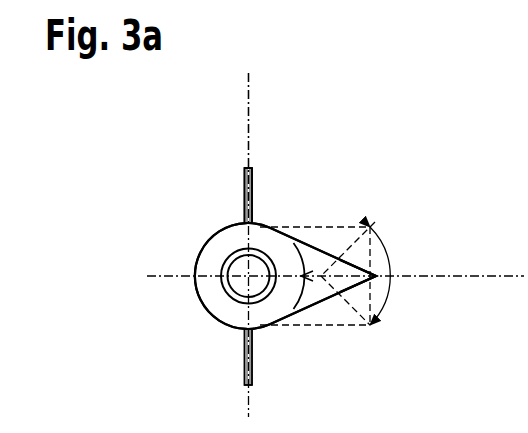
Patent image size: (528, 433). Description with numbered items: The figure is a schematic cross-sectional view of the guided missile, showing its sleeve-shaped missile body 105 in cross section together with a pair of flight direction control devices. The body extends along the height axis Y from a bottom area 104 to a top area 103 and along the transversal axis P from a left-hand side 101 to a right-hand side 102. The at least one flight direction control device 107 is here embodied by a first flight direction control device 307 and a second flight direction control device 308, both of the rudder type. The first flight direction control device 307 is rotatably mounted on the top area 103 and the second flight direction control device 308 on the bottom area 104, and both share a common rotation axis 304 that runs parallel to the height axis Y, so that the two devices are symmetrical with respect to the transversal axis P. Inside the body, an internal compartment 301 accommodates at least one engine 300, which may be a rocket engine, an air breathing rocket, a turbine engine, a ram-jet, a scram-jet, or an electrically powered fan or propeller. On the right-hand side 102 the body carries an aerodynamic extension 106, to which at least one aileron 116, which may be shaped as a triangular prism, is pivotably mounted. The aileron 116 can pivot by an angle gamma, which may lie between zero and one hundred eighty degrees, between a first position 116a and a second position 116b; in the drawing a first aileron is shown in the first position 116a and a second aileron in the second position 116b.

The left-hand side 101 is at (192, 290).
The right-hand side 102 is at (368, 283).
The top area 103 is at (236, 218).
The bottom area 104 is at (237, 333).
The sleeve-shaped missile body 105 is at (208, 229).
The aerodynamic extension 106 is at (286, 252).
The flight direction control device 107 is at (242, 166).
The aileron 116 is at (323, 250).
The first position 116a is at (329, 300).
The second position 116b is at (375, 212).
The engine 300 is at (241, 284).
The internal compartment 301 is at (225, 262).
The rotation axis 304 is at (249, 108).
The first flight direction control device 307 is at (253, 183).
The second flight direction control device 308 is at (253, 360).
The height axis Y is at (249, 82).
The transversal axis P is at (495, 274).
The angle γ gamma is at (391, 276).